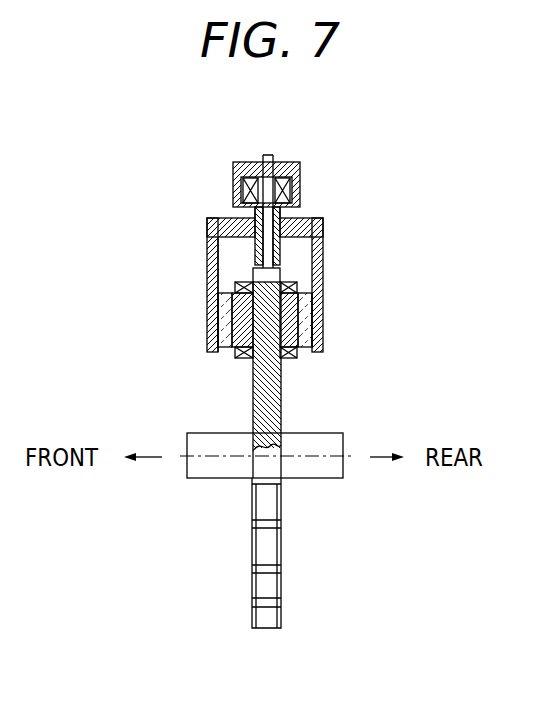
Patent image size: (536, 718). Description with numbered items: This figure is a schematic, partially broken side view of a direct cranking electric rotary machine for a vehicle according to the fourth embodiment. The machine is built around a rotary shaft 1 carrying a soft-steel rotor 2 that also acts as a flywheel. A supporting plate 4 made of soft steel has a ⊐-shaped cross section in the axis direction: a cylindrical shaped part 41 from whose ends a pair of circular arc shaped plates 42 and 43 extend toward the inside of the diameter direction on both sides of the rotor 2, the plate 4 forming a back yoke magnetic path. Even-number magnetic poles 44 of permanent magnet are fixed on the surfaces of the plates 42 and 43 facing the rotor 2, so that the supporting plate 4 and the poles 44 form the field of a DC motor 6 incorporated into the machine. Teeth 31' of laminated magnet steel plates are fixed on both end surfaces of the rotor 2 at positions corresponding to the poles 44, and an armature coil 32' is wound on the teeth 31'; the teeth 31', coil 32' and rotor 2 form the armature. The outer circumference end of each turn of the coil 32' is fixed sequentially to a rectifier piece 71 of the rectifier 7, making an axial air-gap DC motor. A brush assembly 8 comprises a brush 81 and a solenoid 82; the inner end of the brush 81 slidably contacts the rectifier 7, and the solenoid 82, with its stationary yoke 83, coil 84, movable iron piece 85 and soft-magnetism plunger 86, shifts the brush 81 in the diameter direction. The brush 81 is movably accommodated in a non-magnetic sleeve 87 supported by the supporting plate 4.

The rotary shaft 1 is at (224, 469).
The rotor 2 is at (253, 405).
The supporting plate 4 is at (263, 264).
The DC motor 6 is at (303, 374).
The rectifier 7 is at (283, 276).
The brush assembly 8 is at (280, 179).
The teeth 31' is at (260, 335).
The armature coil 32' is at (273, 340).
The cylindrical shaped part 41 is at (226, 221).
The circular arc shaped plate 42 is at (216, 300).
The circular arc shaped plate 43 is at (323, 256).
The magnetic poles 44 is at (220, 323).
The rectifier piece 71 is at (270, 505).
The brush 81 is at (327, 230).
The solenoid 82 is at (241, 154).
The stationary yoke 83 is at (313, 153).
The coil 84 is at (241, 190).
The movable iron piece 85 is at (283, 212).
The plunger 86 is at (267, 153).
The non-magnetic sleeve 87 is at (214, 252).